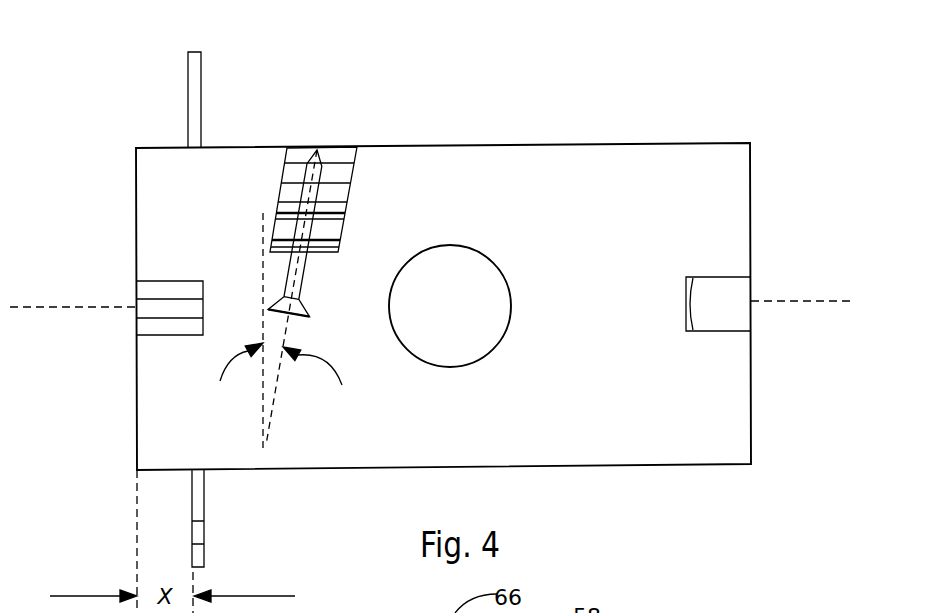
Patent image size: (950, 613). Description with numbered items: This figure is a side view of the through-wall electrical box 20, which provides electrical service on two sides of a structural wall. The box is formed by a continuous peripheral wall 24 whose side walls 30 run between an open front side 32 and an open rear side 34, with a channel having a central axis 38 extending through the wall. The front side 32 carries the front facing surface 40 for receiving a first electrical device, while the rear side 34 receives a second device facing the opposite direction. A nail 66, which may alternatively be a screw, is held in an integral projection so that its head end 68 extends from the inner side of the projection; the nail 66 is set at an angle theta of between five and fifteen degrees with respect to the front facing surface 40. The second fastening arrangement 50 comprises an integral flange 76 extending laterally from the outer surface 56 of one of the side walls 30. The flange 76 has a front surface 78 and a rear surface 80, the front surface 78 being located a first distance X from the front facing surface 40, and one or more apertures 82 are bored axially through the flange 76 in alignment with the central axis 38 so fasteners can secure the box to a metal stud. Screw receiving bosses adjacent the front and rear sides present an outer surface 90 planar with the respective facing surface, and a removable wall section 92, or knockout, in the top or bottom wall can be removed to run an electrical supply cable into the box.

The through-wall electrical box 20 is at (86, 272).
The peripheral wall 24 is at (552, 244).
The side walls 30 is at (438, 145).
The front side 32 is at (137, 388).
The rear side 34 is at (750, 411).
The central axis 38 is at (800, 301).
The front facing surface 40 is at (121, 435).
The second fastening arrangement 50 is at (252, 81).
The outer surface 56 is at (531, 130).
The nail 66 is at (282, 273).
The head end 68 is at (300, 297).
The integral flange 76 is at (198, 52).
The front surface 78 is at (172, 117).
The rear surface 80 is at (217, 117).
The apertures 82 is at (198, 531).
The outer surface 90 is at (121, 327).
The removable wall sections 92 is at (450, 306).